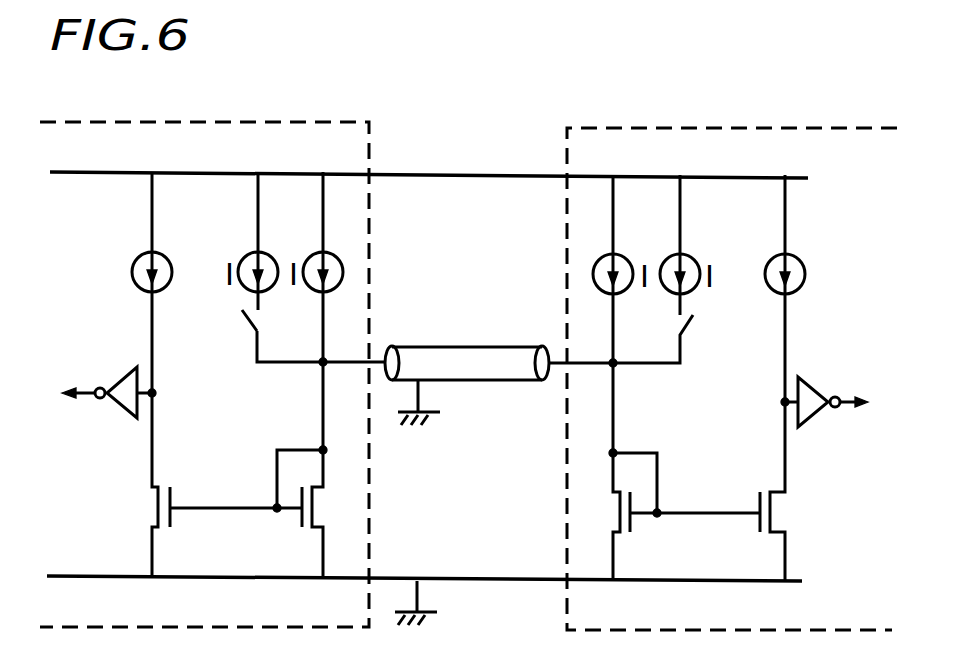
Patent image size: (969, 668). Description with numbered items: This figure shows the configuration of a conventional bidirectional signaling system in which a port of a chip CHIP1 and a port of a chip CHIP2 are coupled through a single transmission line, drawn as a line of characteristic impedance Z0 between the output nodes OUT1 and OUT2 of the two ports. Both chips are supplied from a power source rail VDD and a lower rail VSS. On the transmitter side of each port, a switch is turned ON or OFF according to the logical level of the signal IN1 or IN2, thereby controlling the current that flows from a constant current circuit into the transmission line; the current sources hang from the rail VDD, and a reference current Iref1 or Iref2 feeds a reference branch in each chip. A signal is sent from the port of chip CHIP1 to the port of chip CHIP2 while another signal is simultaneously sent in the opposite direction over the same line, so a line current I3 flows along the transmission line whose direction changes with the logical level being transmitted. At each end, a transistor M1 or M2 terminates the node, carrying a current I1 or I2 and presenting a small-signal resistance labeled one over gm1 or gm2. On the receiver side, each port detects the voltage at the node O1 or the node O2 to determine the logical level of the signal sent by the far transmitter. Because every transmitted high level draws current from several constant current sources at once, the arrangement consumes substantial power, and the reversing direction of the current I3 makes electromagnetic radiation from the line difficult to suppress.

The positive supply rail VDD is at (429, 157).
The negative supply rail / ground VSS is at (424, 600).
The chip CHIP1 is at (204, 354).
The chip CHIP2 is at (732, 356).
The reference current source of chip 1 Iref1 is at (122, 282).
The reference current source of chip 2 Iref2 is at (813, 288).
The node O1 is at (106, 387).
The node O2 is at (837, 397).
The transistor M1 is at (330, 469).
The transistor M2 is at (668, 472).
The signal IN1 is at (232, 322).
The signal IN2 is at (728, 328).
The output node of chip 1 OUT1 is at (352, 345).
The output node of chip 2 OUT2 is at (591, 348).
The current I1 is at (312, 407).
The current I2 is at (620, 410).
The current I3 is at (472, 335).
The transmission line of characteristic impedance Z0 is at (499, 385).
The 1/gm resistance of M1 gm1 is at (337, 443).
The 1/gm resistance of M2 gm2 is at (595, 445).